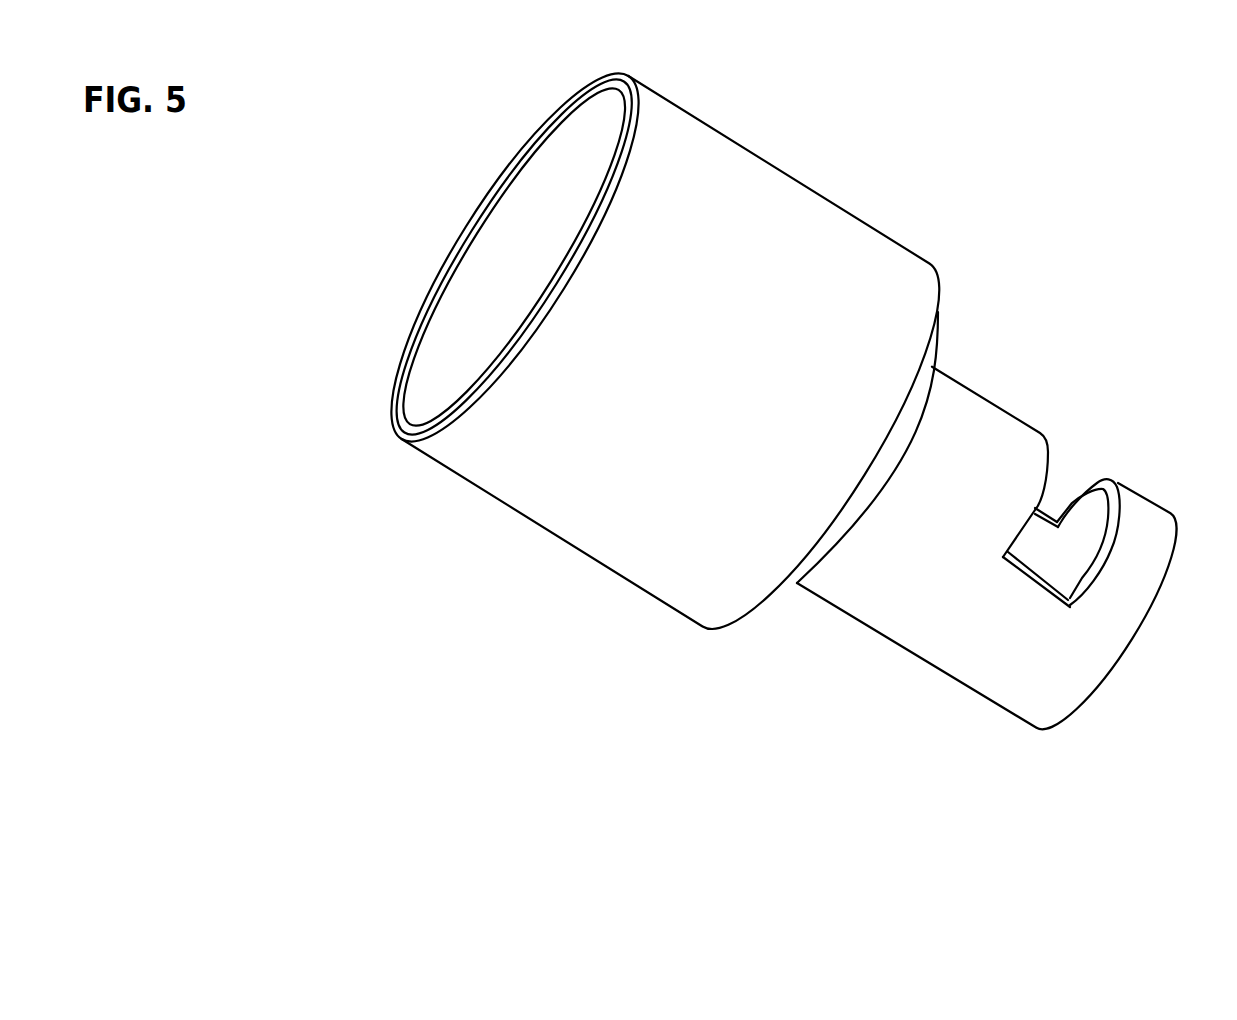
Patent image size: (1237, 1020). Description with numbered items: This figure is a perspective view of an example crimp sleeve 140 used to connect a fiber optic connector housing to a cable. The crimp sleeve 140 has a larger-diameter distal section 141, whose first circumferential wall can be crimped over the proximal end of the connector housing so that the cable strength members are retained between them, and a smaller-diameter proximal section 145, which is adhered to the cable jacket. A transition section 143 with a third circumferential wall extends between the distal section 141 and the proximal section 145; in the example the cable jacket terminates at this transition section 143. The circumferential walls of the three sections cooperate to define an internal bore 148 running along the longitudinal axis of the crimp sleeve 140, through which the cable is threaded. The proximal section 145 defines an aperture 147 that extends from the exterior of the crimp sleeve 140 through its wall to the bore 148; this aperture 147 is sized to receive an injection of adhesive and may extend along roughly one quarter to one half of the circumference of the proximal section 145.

The crimp sleeve 140 is at (1036, 300).
The distal section 141 is at (511, 516).
The transition section 143 is at (790, 596).
The proximal section 145 is at (952, 694).
The aperture 147 is at (1108, 487).
The internal bore 148 is at (443, 372).